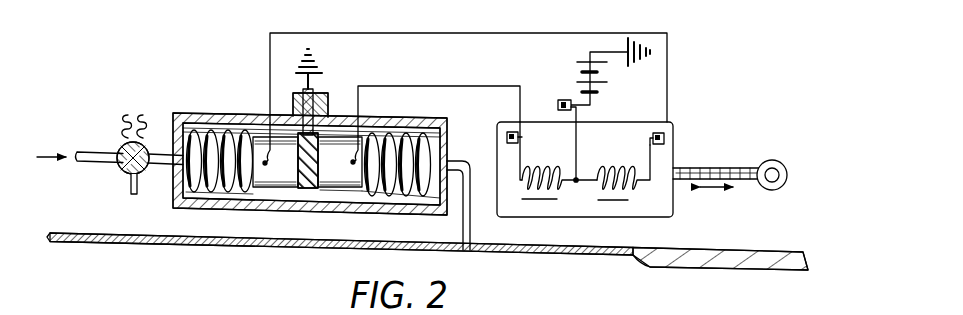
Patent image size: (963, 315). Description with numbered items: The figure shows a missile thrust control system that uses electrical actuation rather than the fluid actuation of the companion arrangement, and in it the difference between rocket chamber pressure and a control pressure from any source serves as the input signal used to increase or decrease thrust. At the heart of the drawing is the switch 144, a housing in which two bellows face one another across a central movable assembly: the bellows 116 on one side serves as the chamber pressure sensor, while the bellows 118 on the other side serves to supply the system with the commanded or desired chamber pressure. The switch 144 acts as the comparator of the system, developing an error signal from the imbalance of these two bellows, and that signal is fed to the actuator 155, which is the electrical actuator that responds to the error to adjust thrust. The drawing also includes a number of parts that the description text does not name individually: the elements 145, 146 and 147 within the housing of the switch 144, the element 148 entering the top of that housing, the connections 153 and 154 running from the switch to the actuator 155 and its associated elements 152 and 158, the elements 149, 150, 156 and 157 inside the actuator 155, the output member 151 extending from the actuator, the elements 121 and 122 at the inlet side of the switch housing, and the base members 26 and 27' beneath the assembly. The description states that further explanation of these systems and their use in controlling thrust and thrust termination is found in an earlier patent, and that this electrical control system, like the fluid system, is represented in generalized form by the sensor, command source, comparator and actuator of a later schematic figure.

The base plate 26 is at (92, 238).
The thickened end portion of base plate 27' is at (720, 273).
The bellows 116 is at (398, 136).
The bellows 118 is at (205, 128).
The control valve 121 is at (123, 147).
The valve stem 122 is at (130, 184).
The switch 144 is at (247, 105).
The left piston body 145 is at (260, 178).
The right piston body 146 is at (362, 186).
The piston contact plate 147 is at (308, 186).
The electrode 148 is at (312, 93).
The right solenoid coil 149 is at (613, 167).
The left solenoid coil 150 is at (549, 155).
The actuating rod 151 is at (705, 168).
The battery 152 is at (605, 83).
The conductor 153 is at (474, 75).
The conductor 154 is at (488, 33).
The actuator 155 is at (684, 122).
The right contact 156 is at (652, 139).
The left contact 157 is at (532, 136).
The switch 158 is at (578, 107).